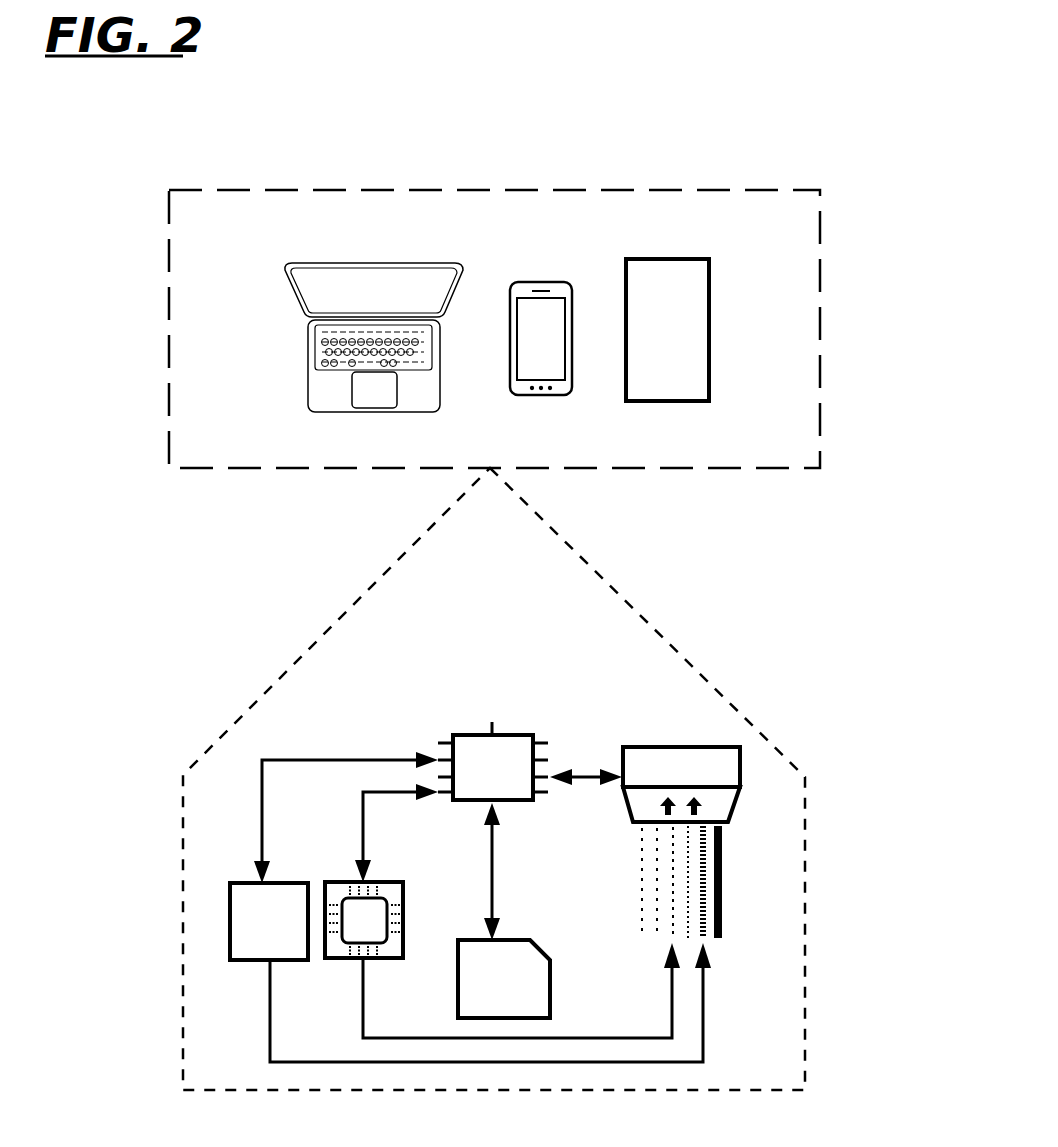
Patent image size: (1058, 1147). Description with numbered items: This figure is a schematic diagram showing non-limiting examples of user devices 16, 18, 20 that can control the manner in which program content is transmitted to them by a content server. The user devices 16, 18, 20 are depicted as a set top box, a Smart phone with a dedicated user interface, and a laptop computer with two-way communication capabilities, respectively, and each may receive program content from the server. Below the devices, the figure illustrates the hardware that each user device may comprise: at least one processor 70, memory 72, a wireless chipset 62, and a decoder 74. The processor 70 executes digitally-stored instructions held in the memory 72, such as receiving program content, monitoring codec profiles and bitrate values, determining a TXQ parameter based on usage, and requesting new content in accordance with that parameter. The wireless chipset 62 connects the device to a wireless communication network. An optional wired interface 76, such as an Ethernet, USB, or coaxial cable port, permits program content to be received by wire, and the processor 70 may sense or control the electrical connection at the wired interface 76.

The user device 16 is at (738, 128).
The user device 18 is at (743, 215).
The user device 20 is at (801, 218).
The wireless chipset 62 is at (349, 932).
The processor 70 is at (478, 779).
The memory 72 is at (488, 990).
The decoder 74 is at (666, 780).
The wired interface 76 is at (254, 935).